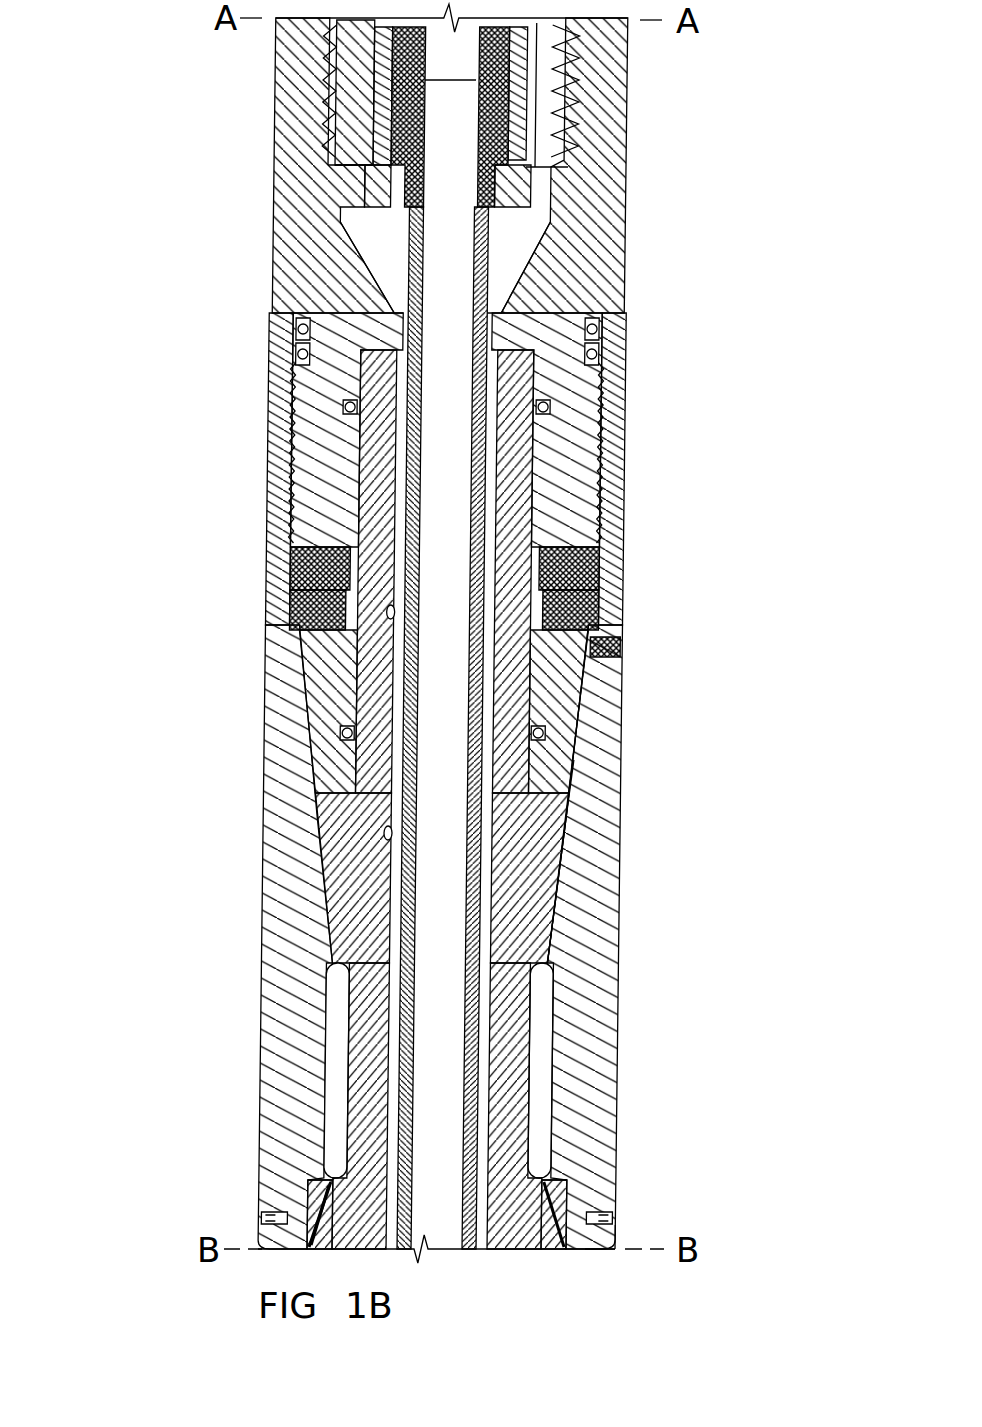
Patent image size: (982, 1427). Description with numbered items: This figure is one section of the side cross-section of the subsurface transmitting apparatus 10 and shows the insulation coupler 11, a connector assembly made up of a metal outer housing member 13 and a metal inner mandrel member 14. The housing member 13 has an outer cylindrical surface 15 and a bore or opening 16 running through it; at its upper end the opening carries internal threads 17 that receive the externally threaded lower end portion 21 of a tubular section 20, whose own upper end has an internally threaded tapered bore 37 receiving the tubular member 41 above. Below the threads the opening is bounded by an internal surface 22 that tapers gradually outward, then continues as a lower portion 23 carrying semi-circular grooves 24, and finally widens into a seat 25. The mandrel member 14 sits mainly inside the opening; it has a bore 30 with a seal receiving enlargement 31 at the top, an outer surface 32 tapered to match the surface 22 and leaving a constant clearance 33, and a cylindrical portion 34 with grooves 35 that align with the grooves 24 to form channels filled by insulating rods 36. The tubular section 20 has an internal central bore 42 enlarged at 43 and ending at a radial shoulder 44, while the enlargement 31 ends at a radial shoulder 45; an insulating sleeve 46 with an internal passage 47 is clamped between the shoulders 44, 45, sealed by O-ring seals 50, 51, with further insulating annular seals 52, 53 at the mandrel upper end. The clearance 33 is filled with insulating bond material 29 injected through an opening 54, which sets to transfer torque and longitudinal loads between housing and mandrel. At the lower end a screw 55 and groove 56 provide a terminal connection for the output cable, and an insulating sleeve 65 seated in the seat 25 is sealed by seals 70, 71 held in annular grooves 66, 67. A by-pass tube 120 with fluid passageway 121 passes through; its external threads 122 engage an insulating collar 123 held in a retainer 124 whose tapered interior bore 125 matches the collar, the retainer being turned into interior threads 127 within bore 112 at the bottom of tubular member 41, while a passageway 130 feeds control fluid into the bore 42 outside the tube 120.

The subsurface transmitting apparatus 10 is at (203, 466).
The insulation coupler 11 is at (640, 750).
The outer housing member 13 is at (590, 965).
The inner mandrel member 14 is at (560, 935).
The outer cylindrical surface 15 is at (612, 437).
The bore or opening 16 is at (296, 560).
The internal threads 17 is at (585, 493).
The tubular section 20 is at (570, 270).
The externally threaded lower end portion 21 is at (595, 533).
The internal surface 22 is at (578, 842).
The lower portion 23 is at (290, 883).
The grooves 24 is at (330, 1063).
The seat 25 is at (317, 1180).
The bond material 29 is at (600, 705).
The bore 30 is at (385, 838).
The seal receiving enlargement 31 is at (310, 723).
The outer surface 32 is at (530, 900).
The clearance 33 is at (567, 885).
The cylindrical portion 34 is at (560, 1150).
The grooves 35 is at (338, 962).
The pin or rod 36 is at (333, 1017).
The internally threaded tapered bore 37 is at (575, 108).
The tubular member 41 is at (360, 150).
The internal central bore 42 is at (505, 318).
The enlarged bore 43 is at (348, 398).
The radial shoulder 44 is at (330, 272).
The radial shoulder 45 is at (345, 745).
The sleeve 46 is at (288, 424).
The internal passage 47 is at (388, 612).
The O-ring type seal 50 is at (545, 735).
The O-ring type seal 51 is at (598, 393).
The annular seal 52 is at (590, 622).
The annular seal 53 is at (575, 578).
The opening 54 is at (608, 645).
The screw 55 is at (613, 1240).
The groove 56 is at (620, 1248).
The sleeve 65 is at (263, 1240).
The annular groove 66 is at (593, 1217).
The annular groove 67 is at (565, 1185).
The seal 70 is at (310, 1205).
The seal 71 is at (300, 1188).
The bore 112 is at (333, 62).
The by-pass tube 120 is at (398, 500).
The fluid passageway 121 is at (335, 225).
The external threads 122 is at (383, 110).
The insulating collar 123 is at (378, 205).
The retainer 124 is at (485, 222).
The tapered interior bore 125 is at (532, 170).
The interior threads 127 is at (367, 90).
The passageway 130 is at (552, 52).